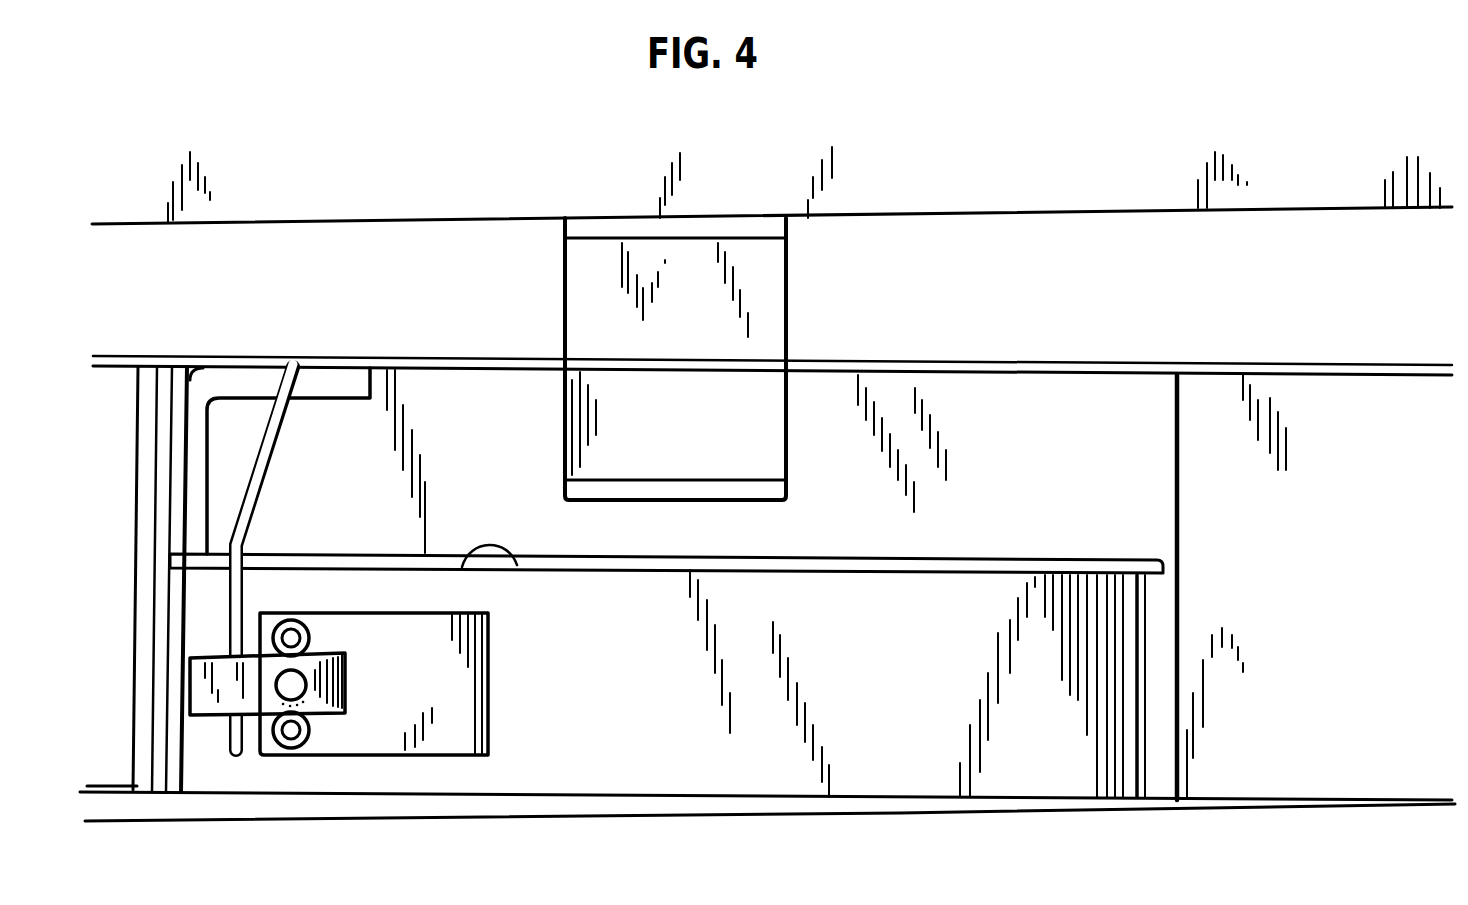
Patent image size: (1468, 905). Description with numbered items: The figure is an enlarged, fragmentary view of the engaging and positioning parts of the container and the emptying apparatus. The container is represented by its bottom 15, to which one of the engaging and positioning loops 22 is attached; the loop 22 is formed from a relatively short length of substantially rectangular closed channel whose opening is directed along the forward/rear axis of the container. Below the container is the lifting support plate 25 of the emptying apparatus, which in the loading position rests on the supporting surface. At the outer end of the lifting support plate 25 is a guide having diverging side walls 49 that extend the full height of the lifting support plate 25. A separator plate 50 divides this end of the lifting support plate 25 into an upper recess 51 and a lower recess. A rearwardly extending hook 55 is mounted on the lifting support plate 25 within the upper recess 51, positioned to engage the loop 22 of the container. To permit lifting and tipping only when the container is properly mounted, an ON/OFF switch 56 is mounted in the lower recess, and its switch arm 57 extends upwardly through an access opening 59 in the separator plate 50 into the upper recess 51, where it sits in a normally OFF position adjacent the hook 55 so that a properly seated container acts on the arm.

The bottom 15 is at (408, 223).
The engaging and positioning loop 22 is at (593, 276).
The lifting support plate 25 is at (901, 361).
The diverging side walls 49 is at (1292, 492).
The separator plate 50 is at (666, 380).
The upper recess 51 is at (472, 455).
The hook 55 is at (302, 367).
The ON/OFF switch 56 is at (458, 689).
The switch arm 57 is at (264, 467).
The access opening 59 is at (517, 565).